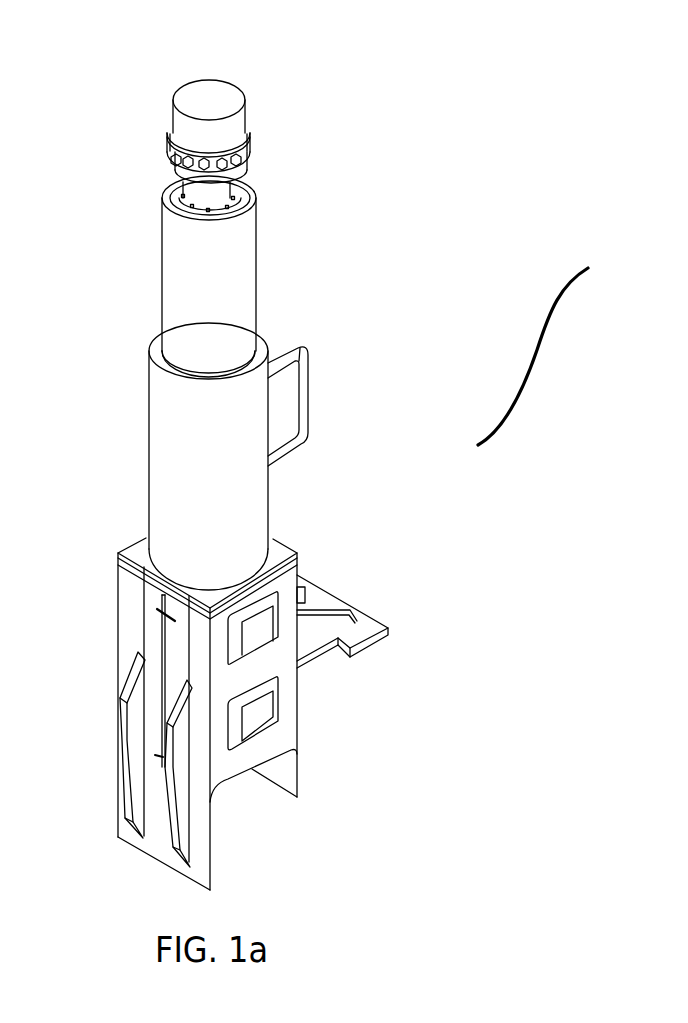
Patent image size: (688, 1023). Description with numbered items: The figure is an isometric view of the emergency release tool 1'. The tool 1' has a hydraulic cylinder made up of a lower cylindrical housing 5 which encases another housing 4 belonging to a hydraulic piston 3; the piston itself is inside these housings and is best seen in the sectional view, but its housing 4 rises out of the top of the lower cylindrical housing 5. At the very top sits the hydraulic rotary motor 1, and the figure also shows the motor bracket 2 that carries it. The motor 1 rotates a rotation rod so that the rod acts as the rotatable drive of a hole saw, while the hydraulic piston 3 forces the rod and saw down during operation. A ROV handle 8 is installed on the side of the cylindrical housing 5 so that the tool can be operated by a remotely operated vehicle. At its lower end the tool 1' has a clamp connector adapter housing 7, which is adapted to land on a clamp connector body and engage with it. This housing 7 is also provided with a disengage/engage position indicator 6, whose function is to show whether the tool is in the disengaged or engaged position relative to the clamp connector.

The hydraulic rotary motor 1 is at (242, 131).
The emergency release tool 1' is at (546, 349).
The motor bracket 2 is at (215, 197).
The hydraulic piston 3 is at (247, 222).
The housing of hydraulic piston 4 is at (238, 272).
The lower cylindrical housing 5 is at (187, 433).
The disengage/engage position indicator 6 is at (109, 714).
The clamp connector adapter housing 7 is at (157, 807).
The ROV handle 8 is at (300, 397).